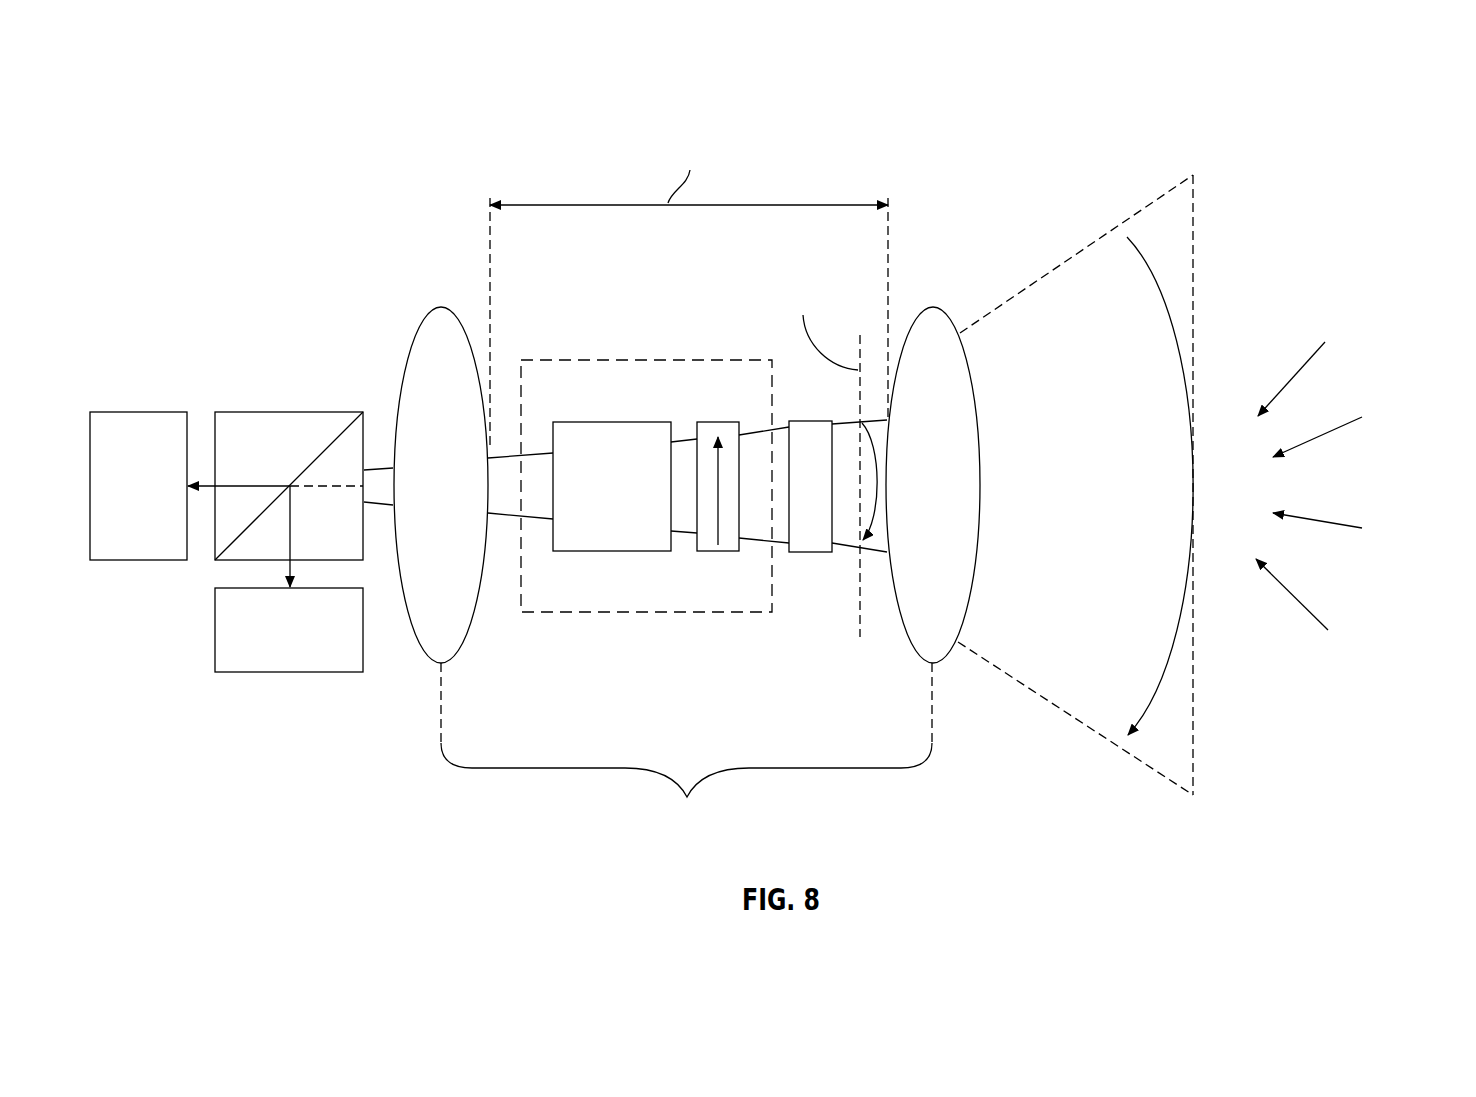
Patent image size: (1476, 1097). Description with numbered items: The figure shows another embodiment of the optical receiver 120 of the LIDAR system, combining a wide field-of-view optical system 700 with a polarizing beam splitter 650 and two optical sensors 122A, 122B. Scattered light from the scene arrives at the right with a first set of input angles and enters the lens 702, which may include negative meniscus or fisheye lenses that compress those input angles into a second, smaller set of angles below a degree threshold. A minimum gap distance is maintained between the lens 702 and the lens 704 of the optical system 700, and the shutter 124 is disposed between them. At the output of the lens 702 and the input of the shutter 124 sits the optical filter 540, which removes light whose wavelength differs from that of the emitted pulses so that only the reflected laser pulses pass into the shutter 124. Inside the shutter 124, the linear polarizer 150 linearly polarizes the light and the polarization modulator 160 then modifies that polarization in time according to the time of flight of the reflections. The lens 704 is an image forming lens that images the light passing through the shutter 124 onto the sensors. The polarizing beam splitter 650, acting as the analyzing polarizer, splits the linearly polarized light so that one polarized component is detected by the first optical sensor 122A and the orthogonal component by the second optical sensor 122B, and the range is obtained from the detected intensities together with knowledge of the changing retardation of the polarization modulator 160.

The optical receiver 120 is at (1041, 147).
The first optical sensor 122A is at (290, 672).
The second optical sensor 122B is at (138, 412).
The shutter 124 is at (646, 504).
The linear polarizer 150 is at (720, 552).
The polarization modulator 160 is at (611, 551).
The optical filter 540 is at (803, 552).
The polarizing beam splitter 650 is at (270, 412).
The optical system 700 is at (687, 497).
The lens 702 is at (932, 307).
The lens 704 is at (441, 308).